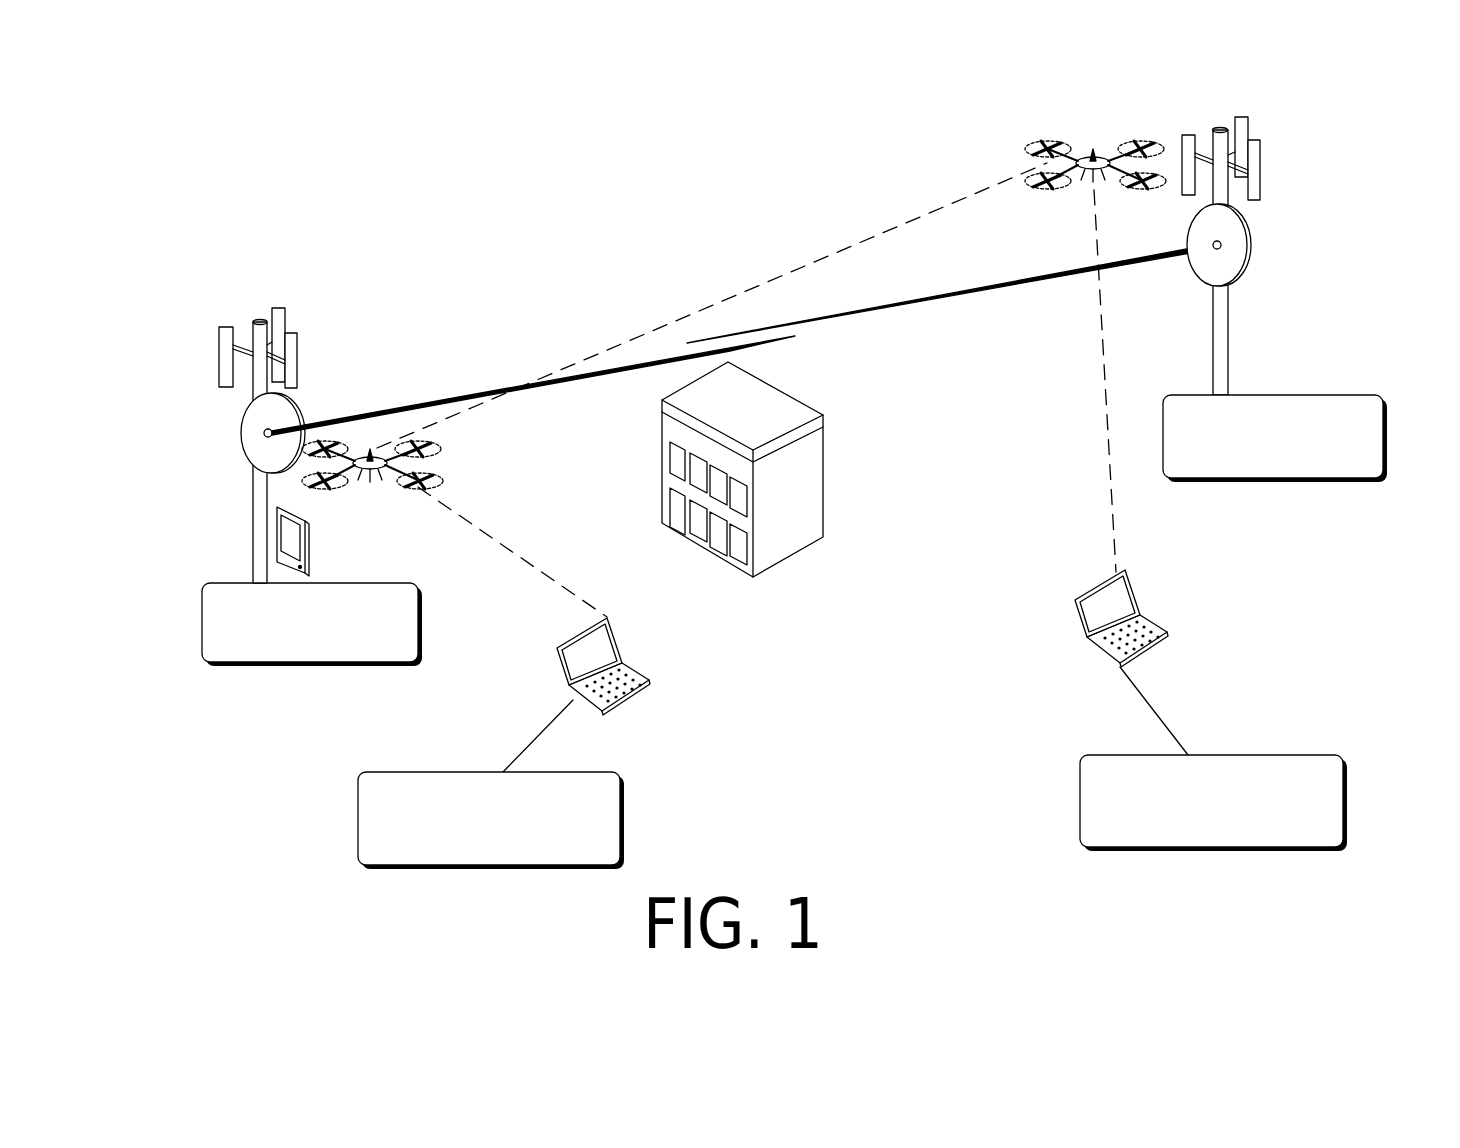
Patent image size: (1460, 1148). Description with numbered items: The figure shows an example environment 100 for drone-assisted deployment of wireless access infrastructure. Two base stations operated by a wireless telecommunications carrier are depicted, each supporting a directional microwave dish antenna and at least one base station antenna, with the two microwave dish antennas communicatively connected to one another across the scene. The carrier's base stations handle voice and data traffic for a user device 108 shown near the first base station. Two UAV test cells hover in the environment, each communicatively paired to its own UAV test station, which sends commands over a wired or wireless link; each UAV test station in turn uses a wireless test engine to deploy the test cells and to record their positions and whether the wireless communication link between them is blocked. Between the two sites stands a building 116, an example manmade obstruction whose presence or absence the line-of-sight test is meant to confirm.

The environment 100 is at (165, 96).
The user device 108 is at (312, 550).
The building 116 is at (822, 415).